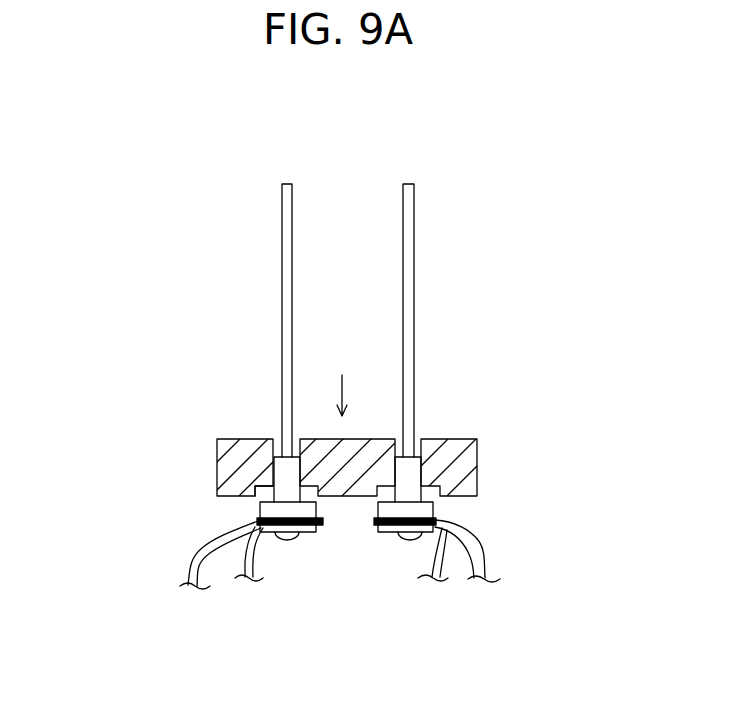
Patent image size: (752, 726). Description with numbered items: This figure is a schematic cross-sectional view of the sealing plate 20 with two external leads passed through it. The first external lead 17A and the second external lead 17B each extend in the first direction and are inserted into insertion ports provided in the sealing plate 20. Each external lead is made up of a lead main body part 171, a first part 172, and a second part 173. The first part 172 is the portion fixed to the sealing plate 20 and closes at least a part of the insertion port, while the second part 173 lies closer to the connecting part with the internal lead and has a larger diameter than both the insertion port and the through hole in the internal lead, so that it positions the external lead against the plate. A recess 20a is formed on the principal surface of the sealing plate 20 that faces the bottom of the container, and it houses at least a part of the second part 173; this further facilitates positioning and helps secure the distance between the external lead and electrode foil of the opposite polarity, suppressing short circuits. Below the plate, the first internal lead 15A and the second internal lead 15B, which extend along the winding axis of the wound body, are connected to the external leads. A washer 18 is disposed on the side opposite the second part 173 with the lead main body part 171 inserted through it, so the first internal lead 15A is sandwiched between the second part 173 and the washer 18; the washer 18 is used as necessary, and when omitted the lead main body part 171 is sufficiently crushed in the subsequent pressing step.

The first external lead 17A is at (209, 301).
The second external lead 17B is at (434, 189).
The lead main body part 171 is at (286, 282).
The first part 172 is at (280, 475).
The second part 173 is at (309, 526).
The washer 18 is at (275, 535).
The sealing plate 20 is at (463, 477).
The recess 20a is at (247, 511).
The first internal lead 15A is at (240, 560).
The second internal lead 15B is at (443, 559).